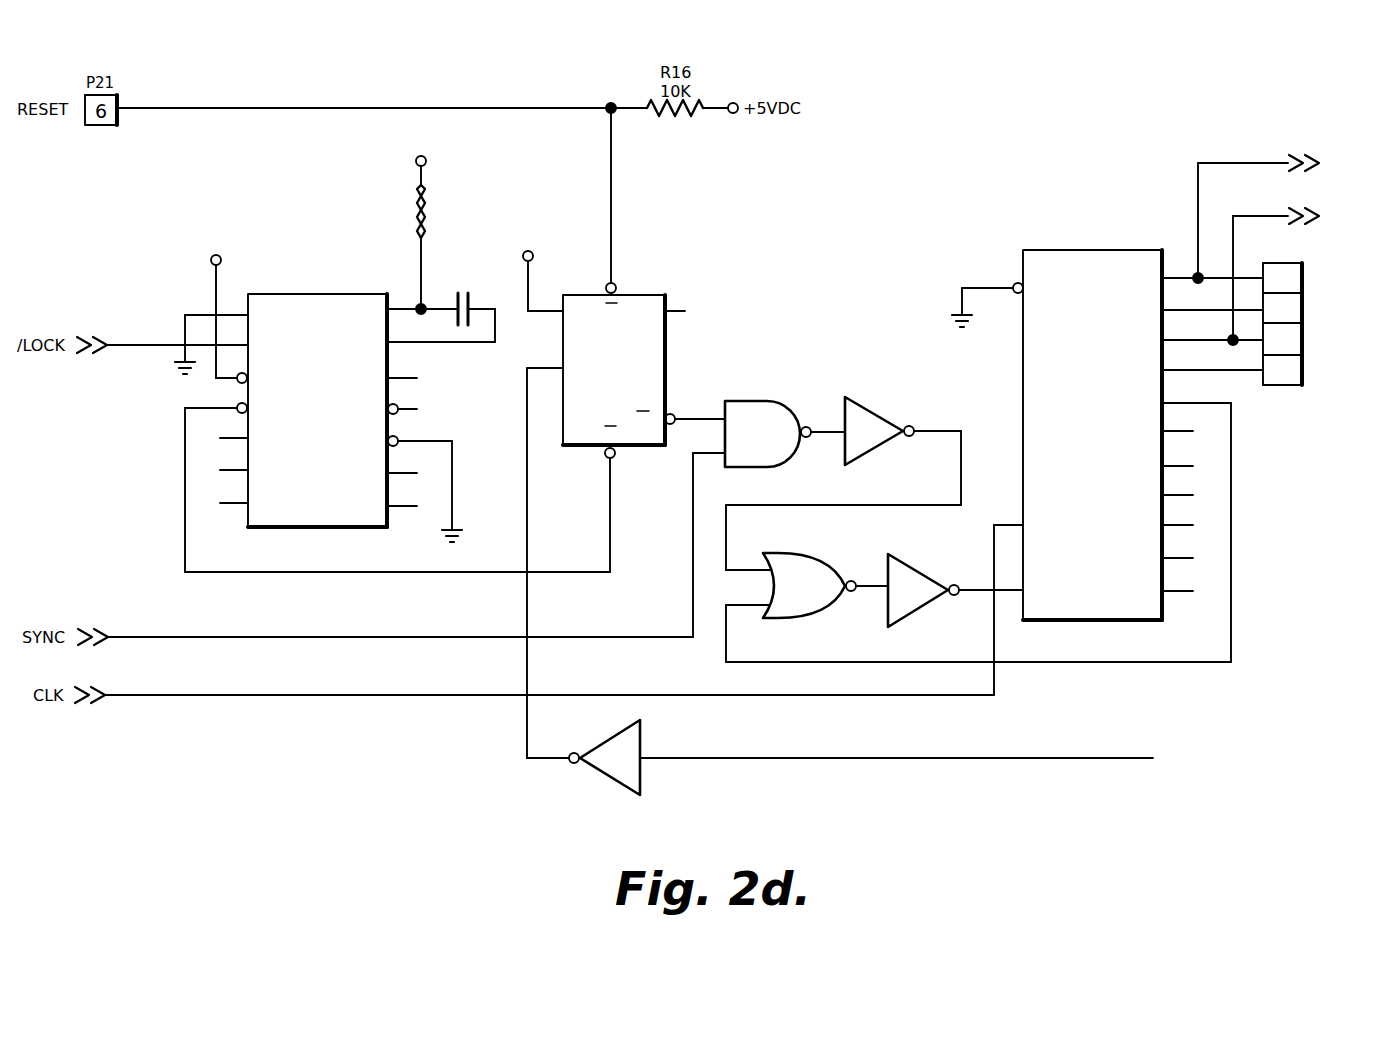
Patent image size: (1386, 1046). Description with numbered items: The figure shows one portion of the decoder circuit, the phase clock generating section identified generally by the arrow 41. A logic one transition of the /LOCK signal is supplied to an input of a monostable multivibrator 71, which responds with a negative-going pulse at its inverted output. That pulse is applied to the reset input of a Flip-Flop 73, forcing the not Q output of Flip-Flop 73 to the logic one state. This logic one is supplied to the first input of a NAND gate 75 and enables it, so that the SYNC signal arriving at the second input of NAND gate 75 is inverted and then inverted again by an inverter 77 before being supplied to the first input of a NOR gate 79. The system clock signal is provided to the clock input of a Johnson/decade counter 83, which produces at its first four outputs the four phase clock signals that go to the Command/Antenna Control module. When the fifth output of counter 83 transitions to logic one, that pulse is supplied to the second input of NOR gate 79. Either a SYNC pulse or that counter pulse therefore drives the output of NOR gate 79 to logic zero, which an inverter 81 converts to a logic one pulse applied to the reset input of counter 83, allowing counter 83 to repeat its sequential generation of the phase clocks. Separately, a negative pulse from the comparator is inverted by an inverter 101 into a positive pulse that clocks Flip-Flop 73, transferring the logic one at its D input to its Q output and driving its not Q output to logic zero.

The phase drive circuit 41 is at (958, 206).
The monostable multivibrator 71 is at (307, 293).
The Flip-Flop 73 is at (648, 295).
The NAND gate 75 is at (758, 400).
The inverter 77 is at (882, 400).
The NOR gate 79 is at (797, 553).
The inverter 81 is at (908, 562).
The Johnson/decade counter 83 is at (1101, 250).
The inverter 101 is at (644, 737).